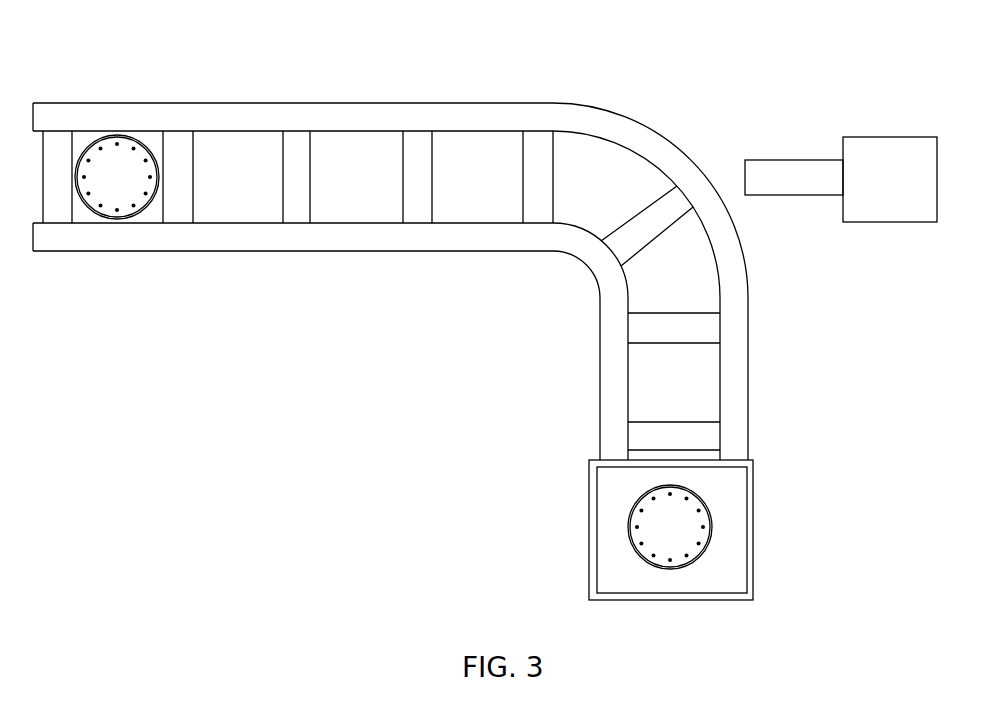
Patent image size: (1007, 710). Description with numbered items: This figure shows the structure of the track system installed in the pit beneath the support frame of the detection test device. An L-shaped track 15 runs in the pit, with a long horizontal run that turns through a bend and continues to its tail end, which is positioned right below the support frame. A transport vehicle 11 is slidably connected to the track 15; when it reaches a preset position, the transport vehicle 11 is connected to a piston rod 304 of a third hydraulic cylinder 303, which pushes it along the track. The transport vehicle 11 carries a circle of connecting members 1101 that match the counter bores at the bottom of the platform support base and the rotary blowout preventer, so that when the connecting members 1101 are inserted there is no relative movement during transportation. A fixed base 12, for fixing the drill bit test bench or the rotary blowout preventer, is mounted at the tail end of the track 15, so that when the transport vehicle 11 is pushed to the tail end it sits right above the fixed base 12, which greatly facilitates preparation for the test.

The transport vehicle 11 is at (664, 530).
The connecting members 1101 is at (592, 558).
The fixed base 12 is at (115, 157).
The track 15 is at (480, 113).
The third hydraulic cylinder 303 is at (868, 153).
The piston rod 304 is at (783, 178).